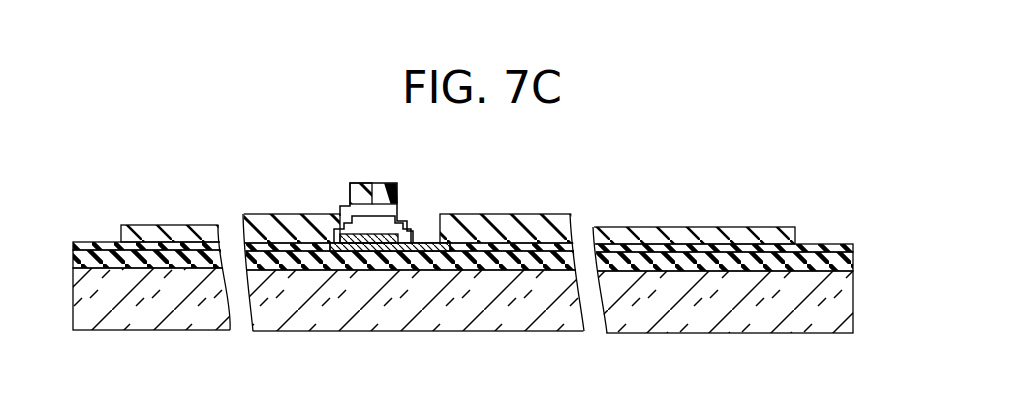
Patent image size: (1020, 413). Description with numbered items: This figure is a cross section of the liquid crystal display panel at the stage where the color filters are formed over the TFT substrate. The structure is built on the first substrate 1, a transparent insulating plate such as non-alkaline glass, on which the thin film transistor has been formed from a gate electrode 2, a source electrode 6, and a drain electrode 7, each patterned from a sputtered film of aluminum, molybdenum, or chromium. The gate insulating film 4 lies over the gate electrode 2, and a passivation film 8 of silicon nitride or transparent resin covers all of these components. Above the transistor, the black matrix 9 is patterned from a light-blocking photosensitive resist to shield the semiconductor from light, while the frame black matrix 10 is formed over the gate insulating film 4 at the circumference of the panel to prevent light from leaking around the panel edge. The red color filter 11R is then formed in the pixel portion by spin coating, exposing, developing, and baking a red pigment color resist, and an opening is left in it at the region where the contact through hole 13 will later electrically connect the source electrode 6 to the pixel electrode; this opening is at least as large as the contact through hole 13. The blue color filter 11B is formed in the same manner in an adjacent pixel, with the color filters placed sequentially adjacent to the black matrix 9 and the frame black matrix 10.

The first substrate 1 is at (843, 305).
The gate electrode 2 is at (368, 258).
The gate insulating film 4 is at (837, 267).
The source electrode 6 is at (412, 262).
The drain electrode 7 is at (331, 262).
The passivation film 8 is at (825, 247).
The black matrix 9 is at (346, 190).
The frame black matrix 10 is at (177, 225).
The blue color filter 11B is at (268, 220).
The red color filter 11R is at (391, 188).
The contact through hole 13 is at (415, 240).